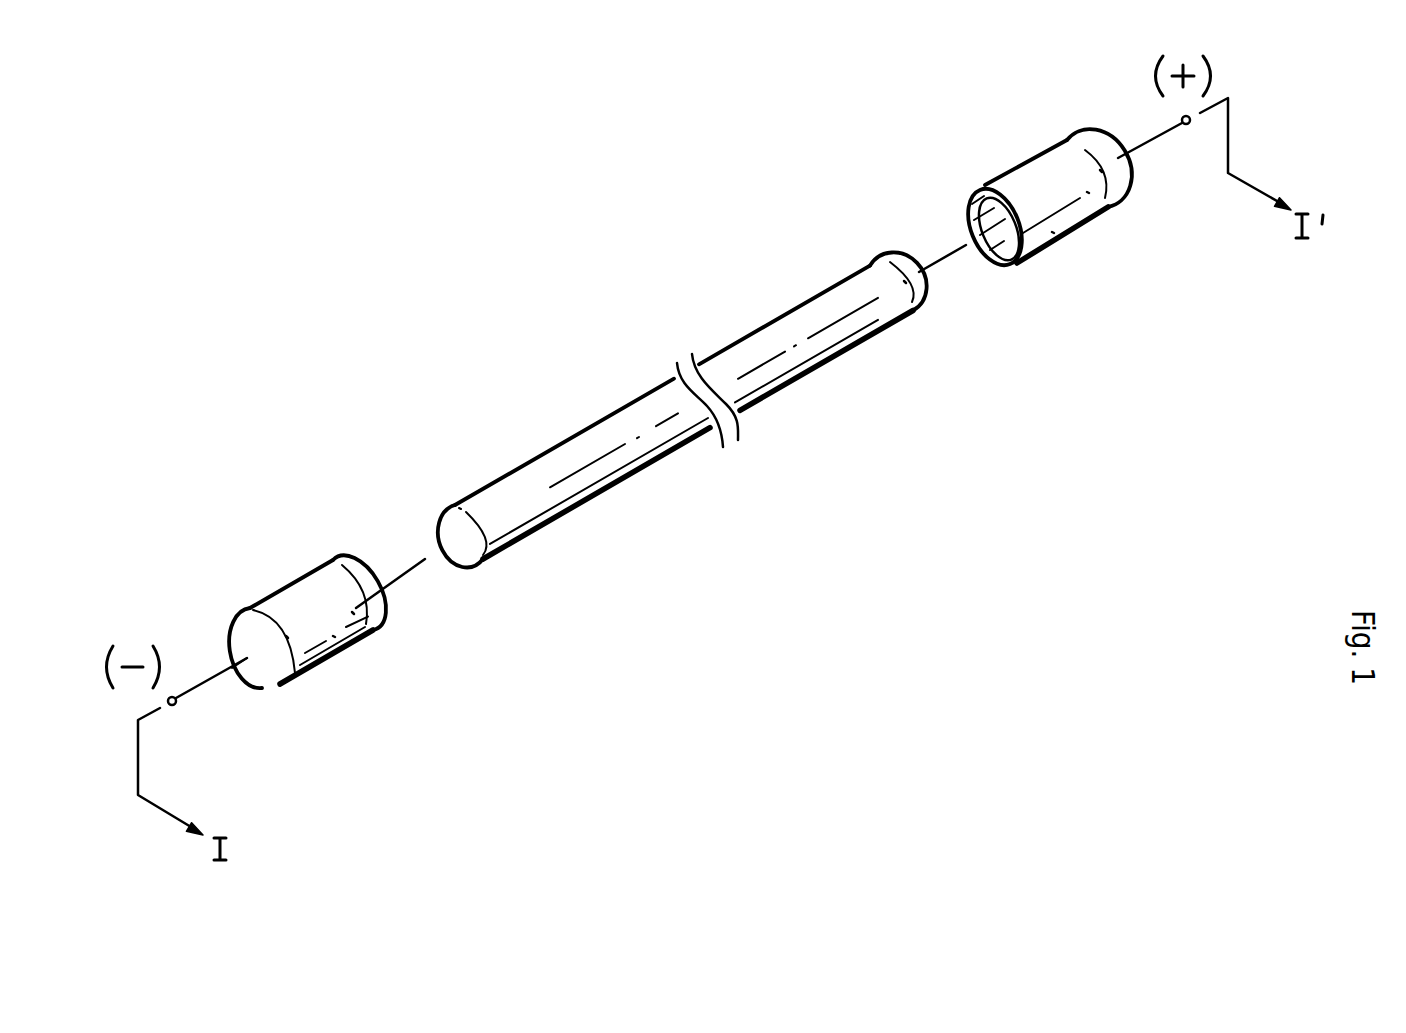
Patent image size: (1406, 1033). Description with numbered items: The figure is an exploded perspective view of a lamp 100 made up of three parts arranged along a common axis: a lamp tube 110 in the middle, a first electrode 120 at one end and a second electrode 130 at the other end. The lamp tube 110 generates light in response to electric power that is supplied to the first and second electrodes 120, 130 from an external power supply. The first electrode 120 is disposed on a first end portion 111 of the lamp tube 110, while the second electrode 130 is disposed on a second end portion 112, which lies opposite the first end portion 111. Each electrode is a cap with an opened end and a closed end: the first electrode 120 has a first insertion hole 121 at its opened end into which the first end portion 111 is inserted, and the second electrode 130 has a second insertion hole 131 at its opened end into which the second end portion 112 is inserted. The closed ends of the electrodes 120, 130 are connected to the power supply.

The lamp 100 is at (360, 141).
The lamp tube 110 is at (716, 316).
The first end portion 111 is at (460, 500).
The second end portion 112 is at (868, 268).
The first electrode 120 is at (306, 598).
The first insertion hole 121 is at (378, 617).
The second electrode 130 is at (1042, 176).
The second insertion hole 131 is at (992, 272).